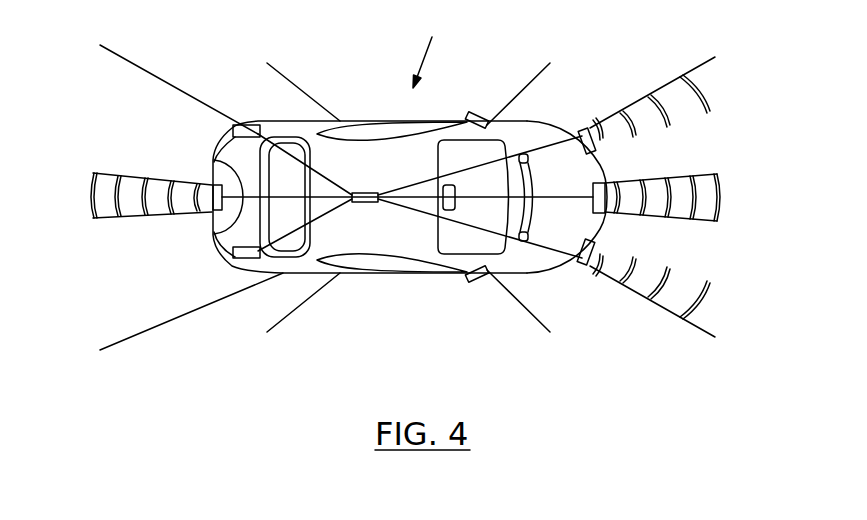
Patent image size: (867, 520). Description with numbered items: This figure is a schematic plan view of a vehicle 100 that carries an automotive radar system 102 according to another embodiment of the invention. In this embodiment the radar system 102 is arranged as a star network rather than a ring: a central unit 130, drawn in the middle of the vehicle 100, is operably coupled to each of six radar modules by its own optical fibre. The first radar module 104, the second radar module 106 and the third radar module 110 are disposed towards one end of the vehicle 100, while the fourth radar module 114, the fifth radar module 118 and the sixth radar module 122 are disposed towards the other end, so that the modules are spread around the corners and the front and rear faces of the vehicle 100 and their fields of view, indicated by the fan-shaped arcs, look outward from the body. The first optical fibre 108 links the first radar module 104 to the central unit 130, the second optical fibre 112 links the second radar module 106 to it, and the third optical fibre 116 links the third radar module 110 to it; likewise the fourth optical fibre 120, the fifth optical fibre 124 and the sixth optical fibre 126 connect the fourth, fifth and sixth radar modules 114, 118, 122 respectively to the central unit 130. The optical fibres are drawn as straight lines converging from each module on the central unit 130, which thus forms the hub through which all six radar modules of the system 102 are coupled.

The vehicle 100 is at (363, 273).
The automotive radar system 102 is at (432, 50).
The first radar module 104 is at (588, 126).
The second radar module 106 is at (603, 200).
The first optical fibre 108 is at (543, 145).
The third radar module 110 is at (580, 268).
The second optical fibre 112 is at (603, 165).
The fourth radar module 114 is at (244, 258).
The third optical fibre 116 is at (538, 248).
The fifth radar module 118 is at (214, 200).
The fourth optical fibre 120 is at (322, 213).
The sixth radar module 122 is at (247, 125).
The fifth optical fibre 124 is at (214, 160).
The sixth optical fibre 126 is at (270, 128).
The central unit 130 is at (367, 192).